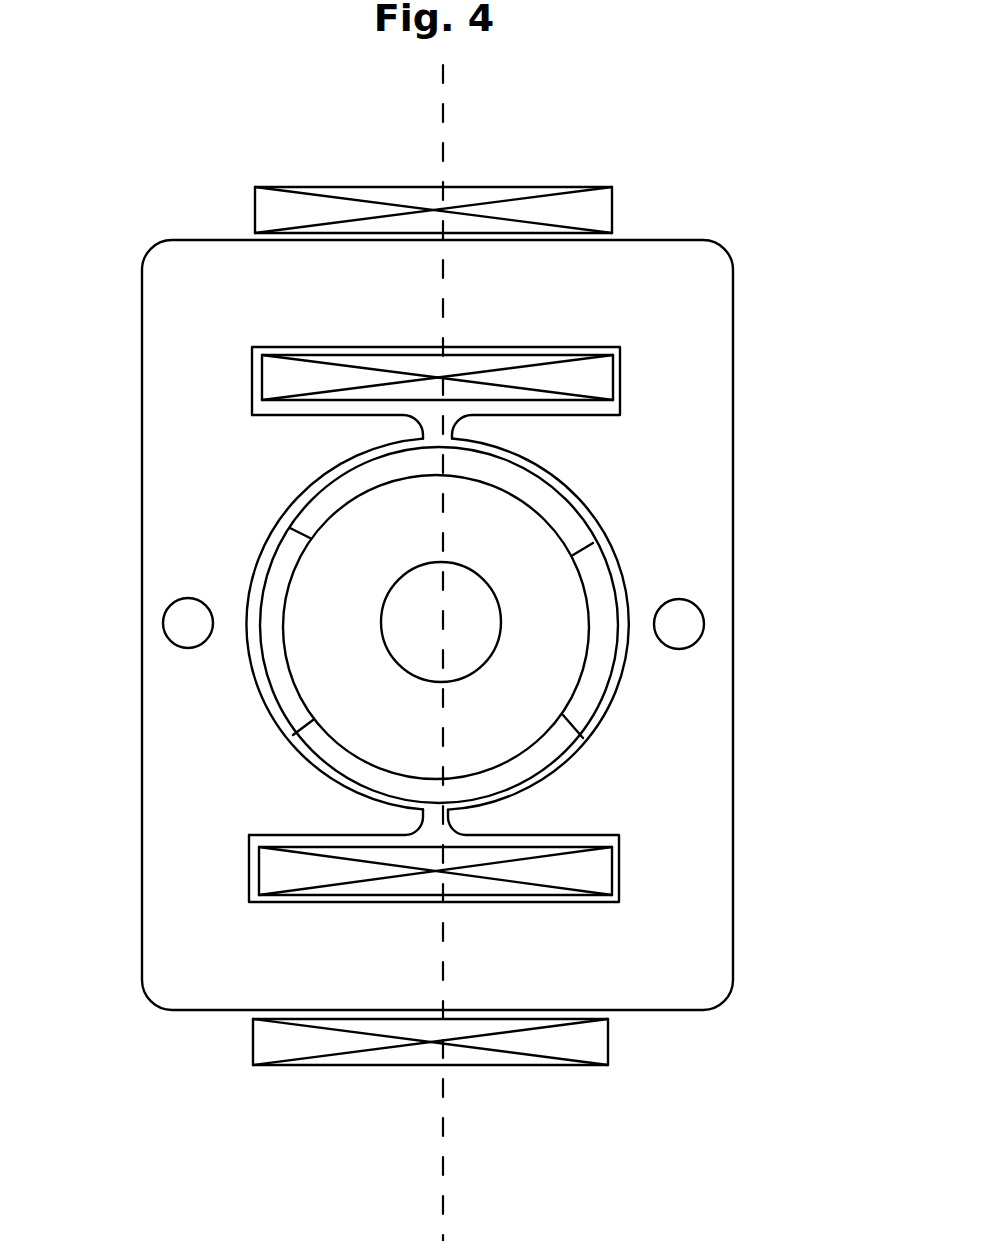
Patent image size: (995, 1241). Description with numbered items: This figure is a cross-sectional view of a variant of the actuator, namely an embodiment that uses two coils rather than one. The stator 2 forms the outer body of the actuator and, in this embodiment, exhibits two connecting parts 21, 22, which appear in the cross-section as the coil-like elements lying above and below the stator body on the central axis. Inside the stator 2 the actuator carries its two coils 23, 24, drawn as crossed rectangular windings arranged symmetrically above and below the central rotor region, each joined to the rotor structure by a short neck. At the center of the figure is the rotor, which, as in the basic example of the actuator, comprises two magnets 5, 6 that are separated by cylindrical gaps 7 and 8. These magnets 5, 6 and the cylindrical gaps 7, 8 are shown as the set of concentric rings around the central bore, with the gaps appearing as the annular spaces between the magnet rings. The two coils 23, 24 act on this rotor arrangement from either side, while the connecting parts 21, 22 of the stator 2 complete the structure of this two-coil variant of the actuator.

The stator 2 is at (192, 433).
The magnet 5 is at (555, 508).
The magnet 6 is at (523, 765).
The cylindrical gap 7 is at (592, 673).
The cylindrical gap 8 is at (272, 688).
The connecting part 21 is at (528, 318).
The connecting part 22 is at (520, 953).
The coil 23 is at (607, 393).
The coil 24 is at (602, 875).